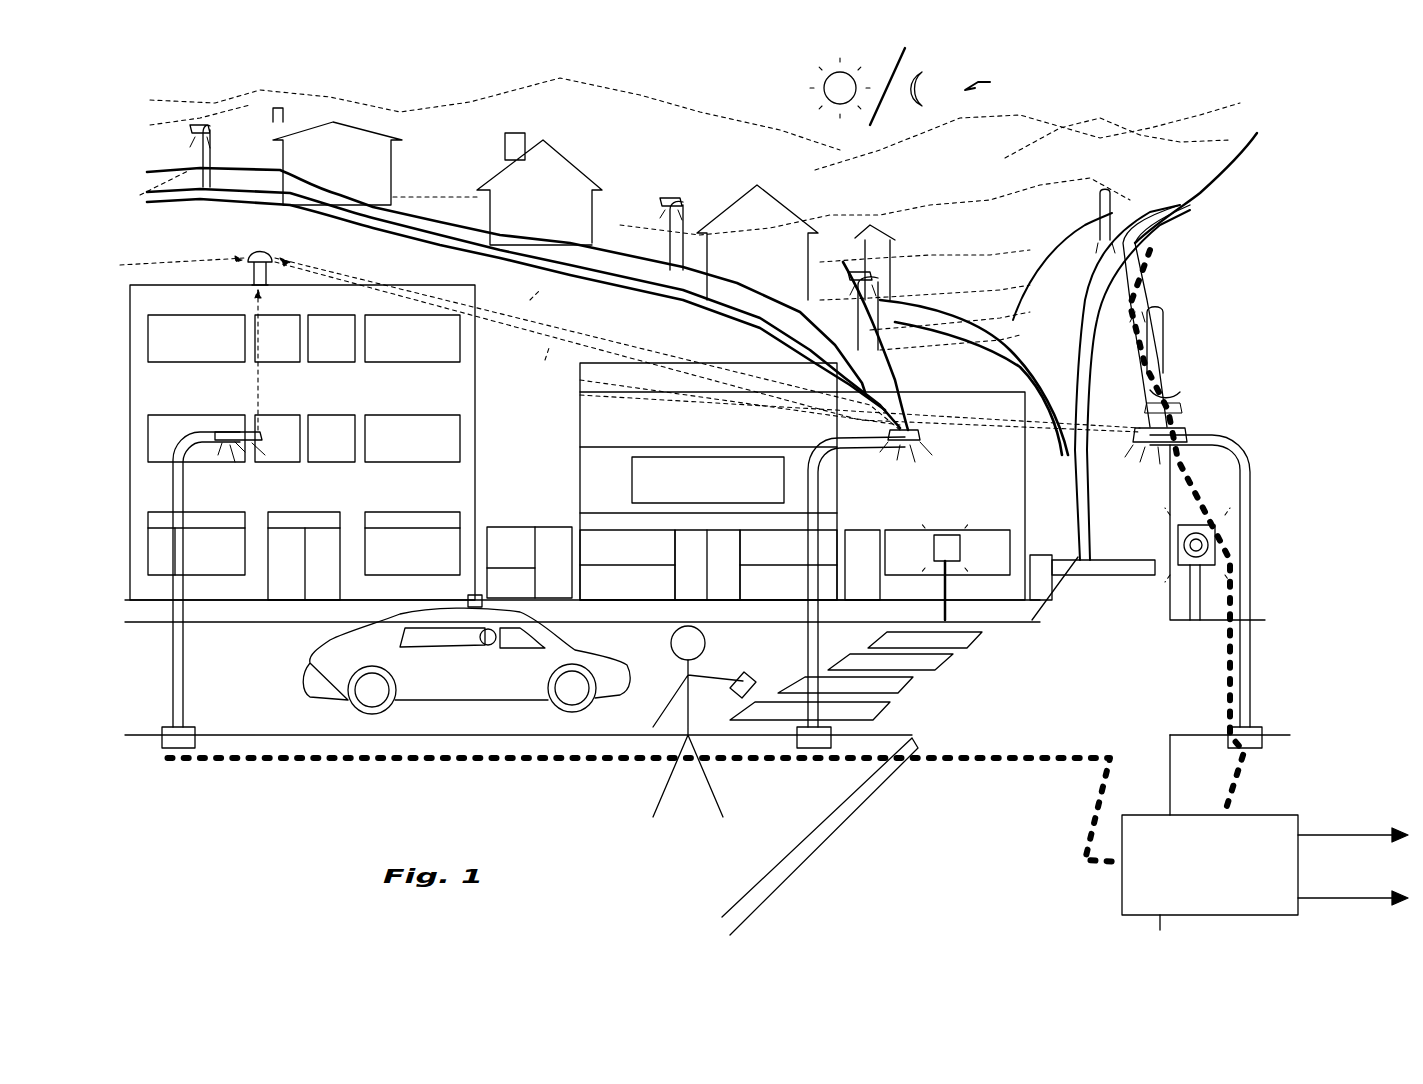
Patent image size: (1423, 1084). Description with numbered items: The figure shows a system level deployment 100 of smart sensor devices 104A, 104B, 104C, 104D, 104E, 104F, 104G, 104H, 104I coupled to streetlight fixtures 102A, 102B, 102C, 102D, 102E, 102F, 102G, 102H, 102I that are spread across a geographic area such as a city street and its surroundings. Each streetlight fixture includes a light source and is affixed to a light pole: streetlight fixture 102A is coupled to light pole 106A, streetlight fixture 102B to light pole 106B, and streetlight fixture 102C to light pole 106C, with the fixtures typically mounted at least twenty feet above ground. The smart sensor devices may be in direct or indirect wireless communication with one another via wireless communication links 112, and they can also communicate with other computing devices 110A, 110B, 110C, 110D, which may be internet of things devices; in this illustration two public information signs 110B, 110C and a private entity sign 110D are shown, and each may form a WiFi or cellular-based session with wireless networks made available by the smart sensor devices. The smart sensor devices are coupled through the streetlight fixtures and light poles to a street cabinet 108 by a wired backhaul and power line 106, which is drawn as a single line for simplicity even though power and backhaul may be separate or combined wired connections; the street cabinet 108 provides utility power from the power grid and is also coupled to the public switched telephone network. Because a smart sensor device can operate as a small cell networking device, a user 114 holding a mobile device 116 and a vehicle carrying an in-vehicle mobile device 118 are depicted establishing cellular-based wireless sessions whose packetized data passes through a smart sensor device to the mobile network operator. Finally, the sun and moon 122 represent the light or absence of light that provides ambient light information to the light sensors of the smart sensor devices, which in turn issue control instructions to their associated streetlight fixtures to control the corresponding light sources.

The system level deployment 100 is at (1190, 64).
The streetlight fixture 102A is at (268, 460).
The streetlight fixture 102B is at (932, 460).
The streetlight fixture 102C is at (1150, 490).
The streetlight fixture 102D is at (1170, 397).
The streetlight fixture 102E is at (1140, 303).
The streetlight fixture 102F is at (1097, 224).
The streetlight fixture 102G is at (848, 278).
The streetlight fixture 102H is at (668, 208).
The streetlight fixture 102I is at (185, 130).
The smart sensor device 104A is at (238, 428).
The smart sensor device 104B is at (906, 428).
The smart sensor device 104C is at (1153, 423).
The smart sensor device 104D is at (1155, 395).
The smart sensor device 104E is at (1147, 293).
The smart sensor device 104F is at (1103, 195).
The smart sensor device 104G is at (860, 270).
The smart sensor device 104H is at (670, 198).
The smart sensor device 104I is at (190, 124).
The wired backhaul and power line 106 is at (900, 757).
The light pole 106A is at (173, 642).
The light pole 106B is at (853, 440).
The light pole 106C is at (1250, 460).
The street cabinet 108 is at (1168, 904).
The other computing device 110A is at (252, 258).
The public information sign 110B is at (640, 457).
The public information sign 110C is at (950, 535).
The private entity sign 110D is at (1178, 540).
The wireless communication links 112 is at (175, 268).
The user 114 is at (675, 735).
The mobile device 116 is at (750, 676).
The in-vehicle mobile device 118 is at (345, 630).
The sun and moon 122 is at (990, 82).